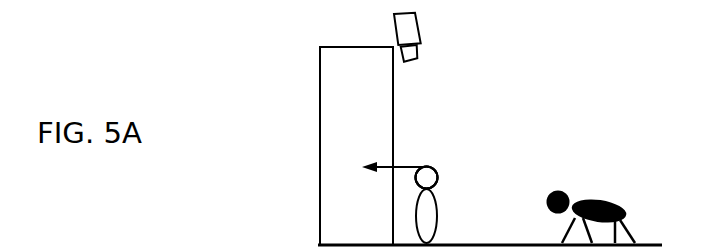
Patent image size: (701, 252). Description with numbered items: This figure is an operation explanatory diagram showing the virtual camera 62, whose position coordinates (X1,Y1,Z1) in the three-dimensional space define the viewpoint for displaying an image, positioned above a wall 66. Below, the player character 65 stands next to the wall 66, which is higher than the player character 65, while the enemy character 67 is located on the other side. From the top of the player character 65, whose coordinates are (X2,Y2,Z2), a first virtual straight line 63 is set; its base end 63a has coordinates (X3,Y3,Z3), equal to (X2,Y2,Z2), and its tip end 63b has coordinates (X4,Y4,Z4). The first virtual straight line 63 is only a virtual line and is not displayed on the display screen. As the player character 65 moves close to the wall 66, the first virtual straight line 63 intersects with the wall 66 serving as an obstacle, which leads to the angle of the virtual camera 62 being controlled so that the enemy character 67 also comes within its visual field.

The virtual camera 62 is at (412, 28).
The first virtual straight line 63 is at (420, 166).
The base end 63a is at (425, 167).
The tip end 63b is at (362, 167).
The player character 65 is at (432, 212).
The wall 66 is at (345, 56).
The enemy character 67 is at (608, 200).